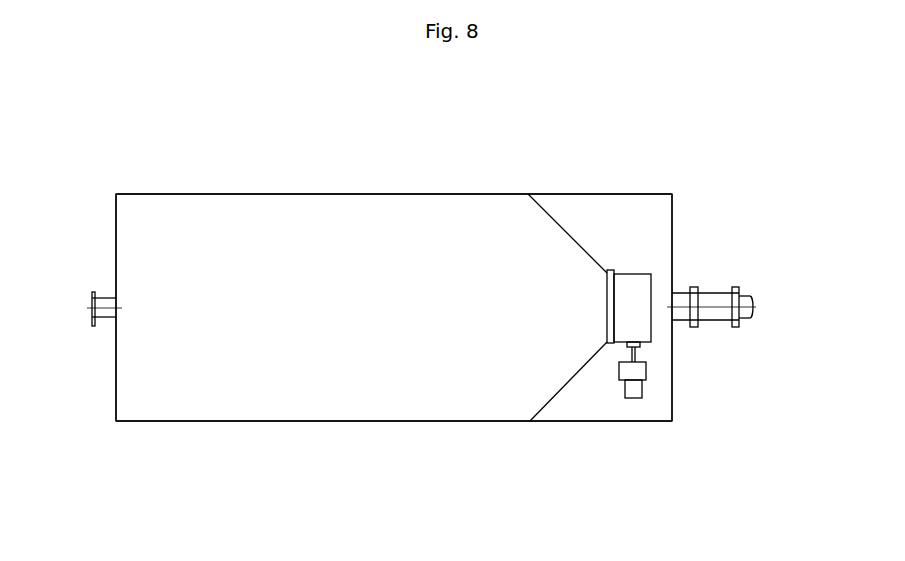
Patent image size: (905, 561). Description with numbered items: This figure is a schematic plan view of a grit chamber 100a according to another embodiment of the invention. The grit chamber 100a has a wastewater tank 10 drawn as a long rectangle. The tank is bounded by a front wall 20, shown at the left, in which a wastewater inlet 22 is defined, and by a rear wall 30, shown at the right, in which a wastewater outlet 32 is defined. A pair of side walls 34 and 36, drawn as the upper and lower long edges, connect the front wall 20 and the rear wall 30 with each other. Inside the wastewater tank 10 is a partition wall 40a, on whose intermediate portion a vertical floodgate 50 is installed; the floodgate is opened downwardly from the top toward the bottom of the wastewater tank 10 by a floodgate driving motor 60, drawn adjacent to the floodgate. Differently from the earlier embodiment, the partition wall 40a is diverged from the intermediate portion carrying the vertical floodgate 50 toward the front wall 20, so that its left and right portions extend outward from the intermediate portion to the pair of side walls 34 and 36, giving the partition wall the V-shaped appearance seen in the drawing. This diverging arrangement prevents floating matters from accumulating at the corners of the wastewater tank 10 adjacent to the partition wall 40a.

The grit chamber 100a is at (127, 126).
The wastewater tank 10 is at (272, 423).
The front wall 20 is at (115, 240).
The wastewater inlet 22 is at (93, 308).
The rear wall 30 is at (672, 368).
The wastewater outlet 32 is at (677, 313).
The side wall 34 is at (315, 193).
The side wall 36 is at (430, 423).
The partition wall 40a is at (567, 230).
The vertical floodgate 50 is at (613, 282).
The floodgate driving motor 60 is at (640, 397).